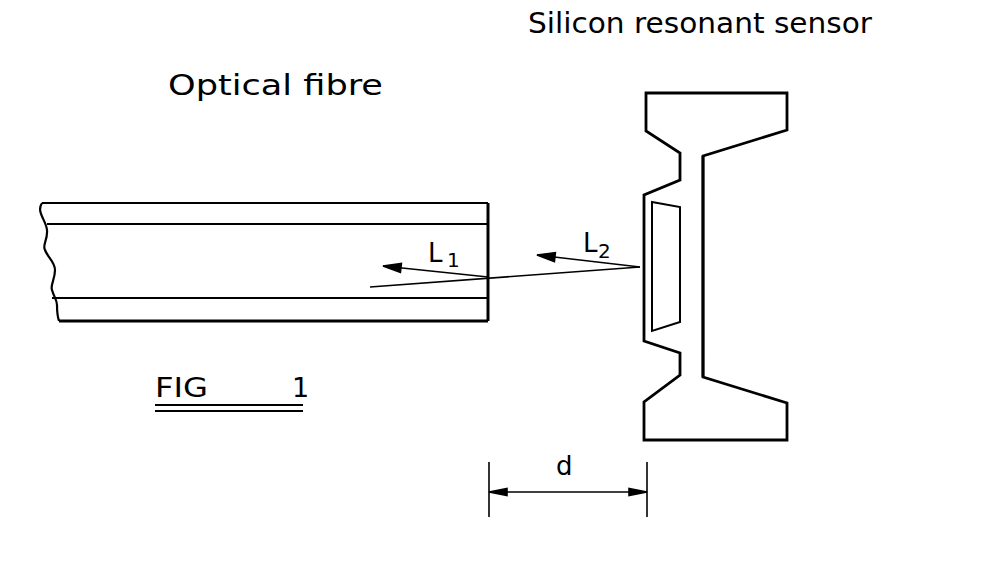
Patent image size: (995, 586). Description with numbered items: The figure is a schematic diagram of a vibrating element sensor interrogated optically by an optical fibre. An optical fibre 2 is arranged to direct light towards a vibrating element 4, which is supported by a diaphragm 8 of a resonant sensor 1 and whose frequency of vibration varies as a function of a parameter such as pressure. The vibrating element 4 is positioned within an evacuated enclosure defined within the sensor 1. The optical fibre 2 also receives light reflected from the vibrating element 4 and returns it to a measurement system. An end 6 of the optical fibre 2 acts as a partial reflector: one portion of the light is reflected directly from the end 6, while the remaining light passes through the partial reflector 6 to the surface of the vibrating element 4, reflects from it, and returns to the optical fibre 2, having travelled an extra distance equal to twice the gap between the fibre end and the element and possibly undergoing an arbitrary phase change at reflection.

The resonant sensor 1 is at (797, 113).
The optical fibre 2 is at (383, 233).
The vibrating element 4 is at (645, 230).
The end of the optical fibre 6 is at (490, 287).
The diaphragm 8 is at (695, 273).